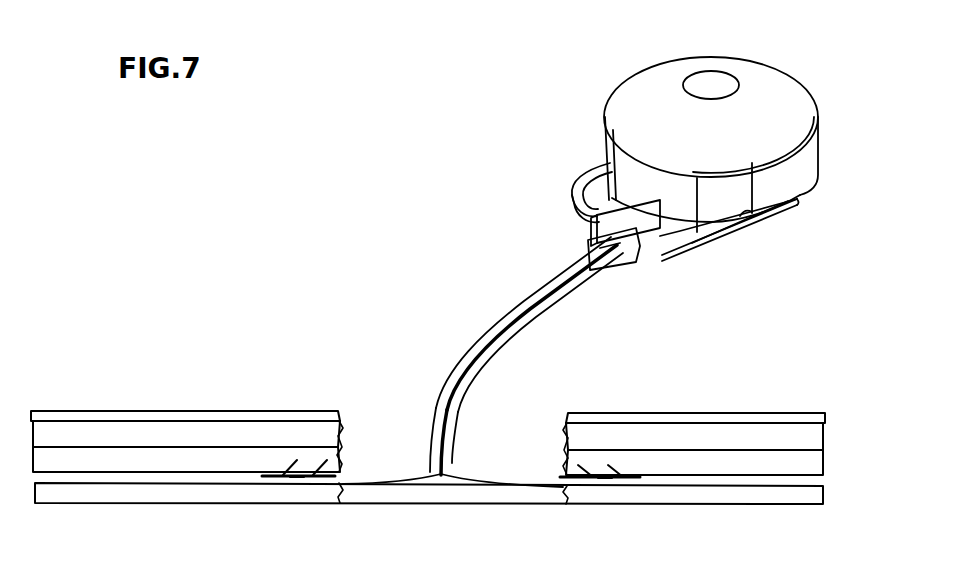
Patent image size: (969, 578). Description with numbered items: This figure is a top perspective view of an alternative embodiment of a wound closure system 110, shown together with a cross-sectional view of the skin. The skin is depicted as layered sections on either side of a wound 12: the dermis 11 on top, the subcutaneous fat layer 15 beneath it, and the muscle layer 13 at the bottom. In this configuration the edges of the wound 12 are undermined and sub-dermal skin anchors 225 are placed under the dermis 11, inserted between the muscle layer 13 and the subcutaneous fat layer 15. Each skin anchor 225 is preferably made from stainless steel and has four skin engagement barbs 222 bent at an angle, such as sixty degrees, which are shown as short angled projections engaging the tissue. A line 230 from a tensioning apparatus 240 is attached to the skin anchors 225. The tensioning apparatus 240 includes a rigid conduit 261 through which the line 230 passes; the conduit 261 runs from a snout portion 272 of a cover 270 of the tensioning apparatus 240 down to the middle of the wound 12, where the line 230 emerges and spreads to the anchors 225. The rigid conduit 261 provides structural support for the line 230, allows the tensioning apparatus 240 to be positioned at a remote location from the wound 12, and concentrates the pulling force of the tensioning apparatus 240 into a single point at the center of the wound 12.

The wound closure system 110 is at (418, 152).
The tensioning apparatus 240 is at (614, 62).
The cover 270 is at (810, 150).
The snout portion 272 is at (650, 223).
The rigid conduit 261 is at (552, 303).
The line 230 is at (442, 450).
The dermis 11 is at (772, 437).
The subcutaneous fat layer 15 is at (802, 463).
The muscle layer 13 is at (802, 493).
The wound 12 is at (390, 442).
The skin engagement barbs 222 is at (318, 467).
The skin anchors 225 is at (297, 478).